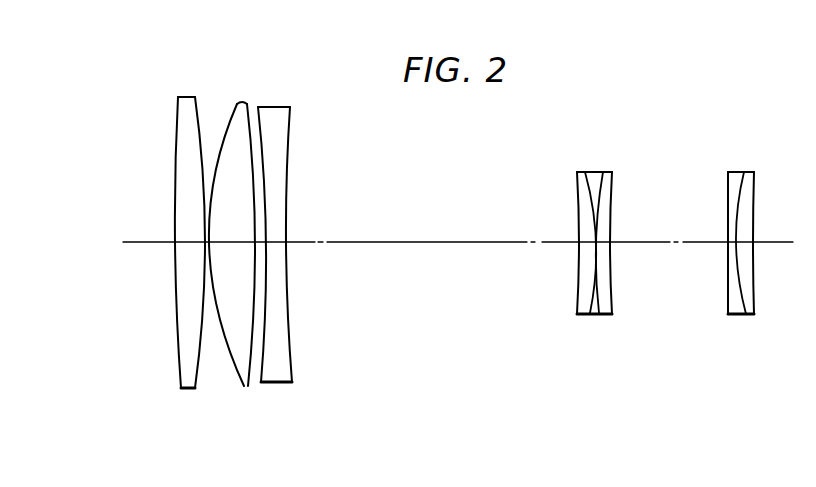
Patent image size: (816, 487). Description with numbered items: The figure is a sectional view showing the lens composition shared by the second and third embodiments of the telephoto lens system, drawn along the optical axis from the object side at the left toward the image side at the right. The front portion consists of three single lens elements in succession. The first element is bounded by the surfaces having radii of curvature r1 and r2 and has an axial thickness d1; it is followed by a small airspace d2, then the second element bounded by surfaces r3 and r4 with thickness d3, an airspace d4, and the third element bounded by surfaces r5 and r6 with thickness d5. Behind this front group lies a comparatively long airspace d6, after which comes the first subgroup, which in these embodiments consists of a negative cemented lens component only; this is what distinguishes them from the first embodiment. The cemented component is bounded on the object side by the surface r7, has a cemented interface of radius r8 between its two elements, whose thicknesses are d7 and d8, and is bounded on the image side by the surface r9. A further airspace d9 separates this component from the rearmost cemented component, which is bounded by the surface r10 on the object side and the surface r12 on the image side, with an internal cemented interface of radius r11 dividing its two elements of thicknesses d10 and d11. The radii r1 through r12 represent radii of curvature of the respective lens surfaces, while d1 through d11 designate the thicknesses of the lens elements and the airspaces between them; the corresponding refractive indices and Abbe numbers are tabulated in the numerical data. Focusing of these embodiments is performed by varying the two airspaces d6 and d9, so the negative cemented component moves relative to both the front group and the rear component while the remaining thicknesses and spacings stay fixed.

The radius of curvature of first lens surface r1 is at (182, 378).
The radius of curvature of second lens surface r2 is at (198, 380).
The radius of curvature of third lens surface r3 is at (238, 381).
The radius of curvature of fourth lens surface r4 is at (250, 382).
The radius of curvature of fifth lens surface r5 is at (262, 378).
The radius of curvature of sixth lens surface r6 is at (293, 376).
The radius of curvature of seventh lens surface r7 is at (578, 303).
The radius of curvature of eighth lens surface r8 is at (590, 303).
The radius of curvature of ninth lens surface r9 is at (612, 302).
The radius of curvature of tenth lens surface r10 is at (727, 304).
The radius of curvature of eleventh lens surface r11 is at (745, 304).
The radius of curvature of twelfth lens surface r12 is at (755, 298).
The thickness of first lens element d1 is at (188, 238).
The airspace between first and second lens elements d2 is at (208, 243).
The thickness of second lens element d3 is at (236, 241).
The airspace between second and third lens elements d4 is at (260, 245).
The thickness of third lens element d5 is at (279, 240).
The airspace between third lens element and cemented lens component d6 is at (420, 241).
The thickness of first element of negative cemented lens component d7 is at (583, 238).
The thickness of second element of negative cemented lens component d8 is at (602, 238).
The airspace between cemented lens component and rear lens component d9 is at (646, 244).
The thickness of first element of rear cemented lens component d10 is at (730, 239).
The thickness of second element of rear cemented lens component d11 is at (748, 239).